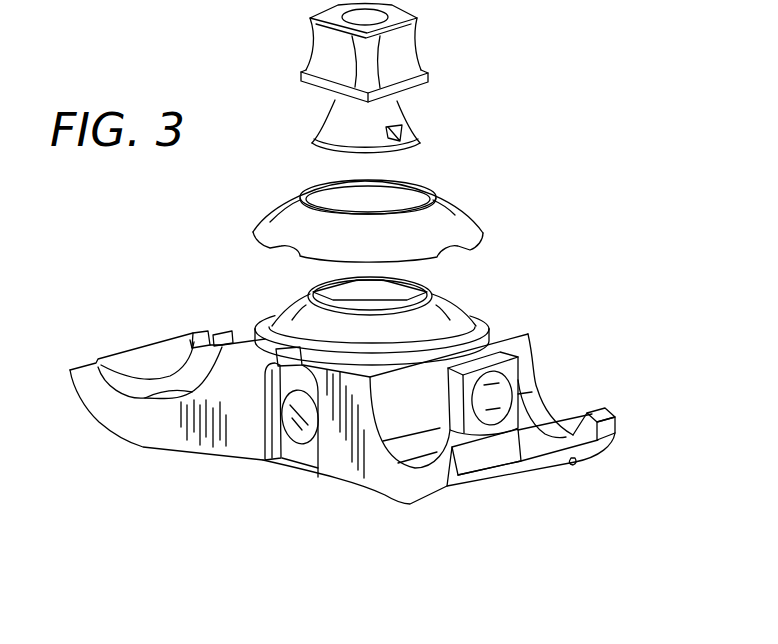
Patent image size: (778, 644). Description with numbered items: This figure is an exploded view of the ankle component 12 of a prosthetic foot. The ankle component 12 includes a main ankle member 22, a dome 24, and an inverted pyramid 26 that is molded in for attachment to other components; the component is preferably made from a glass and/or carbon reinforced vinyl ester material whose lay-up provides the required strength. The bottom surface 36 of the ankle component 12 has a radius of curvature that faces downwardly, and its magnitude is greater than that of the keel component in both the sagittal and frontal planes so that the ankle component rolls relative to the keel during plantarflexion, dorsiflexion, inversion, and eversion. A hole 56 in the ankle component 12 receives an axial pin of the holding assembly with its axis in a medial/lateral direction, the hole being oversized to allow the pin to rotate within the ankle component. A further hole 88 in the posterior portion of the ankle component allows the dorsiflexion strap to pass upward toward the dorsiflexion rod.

The ankle component 12 is at (680, 500).
The main ankle member 22 is at (470, 480).
The dome 24 is at (447, 208).
The inverted pyramid 26 is at (300, 33).
The bottom surface 36 is at (193, 453).
The hole 56 is at (280, 458).
The hole 88 is at (574, 464).